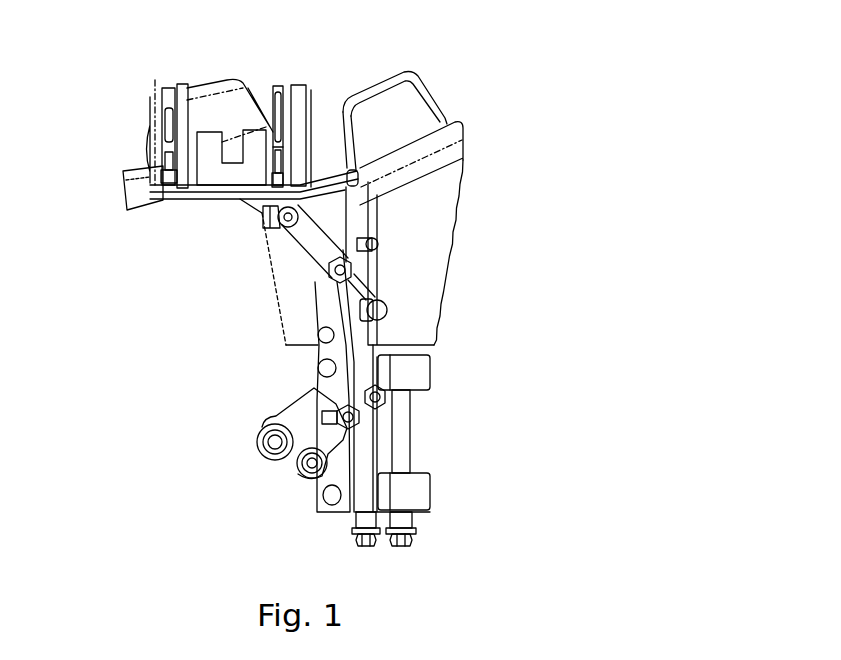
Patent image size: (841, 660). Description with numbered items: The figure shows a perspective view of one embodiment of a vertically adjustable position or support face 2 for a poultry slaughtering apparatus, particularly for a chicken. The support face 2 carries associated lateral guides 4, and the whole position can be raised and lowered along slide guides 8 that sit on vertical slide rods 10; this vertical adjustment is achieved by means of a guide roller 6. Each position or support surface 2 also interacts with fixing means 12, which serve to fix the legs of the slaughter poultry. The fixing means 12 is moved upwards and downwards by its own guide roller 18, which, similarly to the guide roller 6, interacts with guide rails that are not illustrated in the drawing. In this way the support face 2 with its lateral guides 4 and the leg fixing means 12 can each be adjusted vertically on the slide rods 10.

The support face 2 is at (322, 127).
The lateral guides 4 is at (213, 108).
The guide roller 6 is at (330, 458).
The slide guides 8 is at (423, 370).
The vertical slide rods 10 is at (403, 433).
The fixing means 12 is at (160, 143).
The guide roller 18 is at (288, 421).